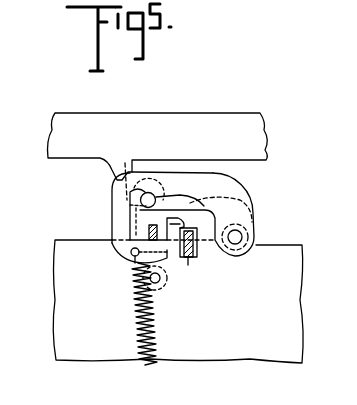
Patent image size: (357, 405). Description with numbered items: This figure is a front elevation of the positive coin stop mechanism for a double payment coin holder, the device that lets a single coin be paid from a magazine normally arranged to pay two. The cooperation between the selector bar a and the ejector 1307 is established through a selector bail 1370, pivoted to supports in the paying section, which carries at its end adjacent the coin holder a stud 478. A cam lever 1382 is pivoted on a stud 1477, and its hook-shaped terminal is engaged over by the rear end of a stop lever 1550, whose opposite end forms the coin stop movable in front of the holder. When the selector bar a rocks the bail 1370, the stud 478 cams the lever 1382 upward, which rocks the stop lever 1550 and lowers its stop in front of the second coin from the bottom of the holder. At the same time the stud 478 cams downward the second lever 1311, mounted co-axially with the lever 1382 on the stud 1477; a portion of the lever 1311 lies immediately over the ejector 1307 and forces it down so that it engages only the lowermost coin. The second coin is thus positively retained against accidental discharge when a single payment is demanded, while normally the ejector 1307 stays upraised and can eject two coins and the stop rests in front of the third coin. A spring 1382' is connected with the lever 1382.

The selector bar a is at (167, 128).
The second lever 1311 is at (218, 198).
The cam lever 1382 is at (223, 208).
The stud 1477 is at (238, 236).
The selector bail 1370 is at (150, 221).
The stud 478 is at (130, 205).
The ejector 1307 is at (188, 265).
The stop lever 1550 is at (126, 245).
The spring 1382' is at (186, 314).